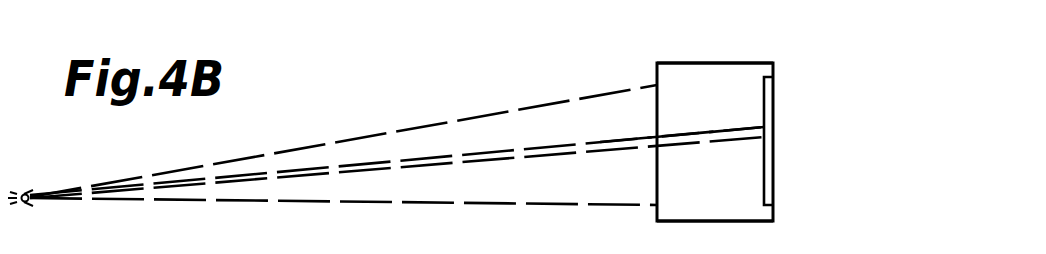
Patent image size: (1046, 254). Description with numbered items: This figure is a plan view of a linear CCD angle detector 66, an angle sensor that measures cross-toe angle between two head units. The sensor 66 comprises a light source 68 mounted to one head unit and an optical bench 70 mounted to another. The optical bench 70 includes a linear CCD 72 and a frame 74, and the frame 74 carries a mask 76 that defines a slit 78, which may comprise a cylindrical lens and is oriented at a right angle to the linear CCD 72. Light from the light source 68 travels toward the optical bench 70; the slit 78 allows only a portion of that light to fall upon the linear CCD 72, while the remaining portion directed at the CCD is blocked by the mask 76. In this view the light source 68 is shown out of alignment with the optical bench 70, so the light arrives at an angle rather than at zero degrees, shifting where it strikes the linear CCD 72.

The linear CCD angle detector 66 is at (335, 60).
The light source 68 is at (26, 192).
The optical bench 70 is at (710, 65).
The linear CCD 72 is at (768, 88).
The frame 74 is at (737, 221).
The mask 76 is at (658, 66).
The slit 78 is at (652, 143).